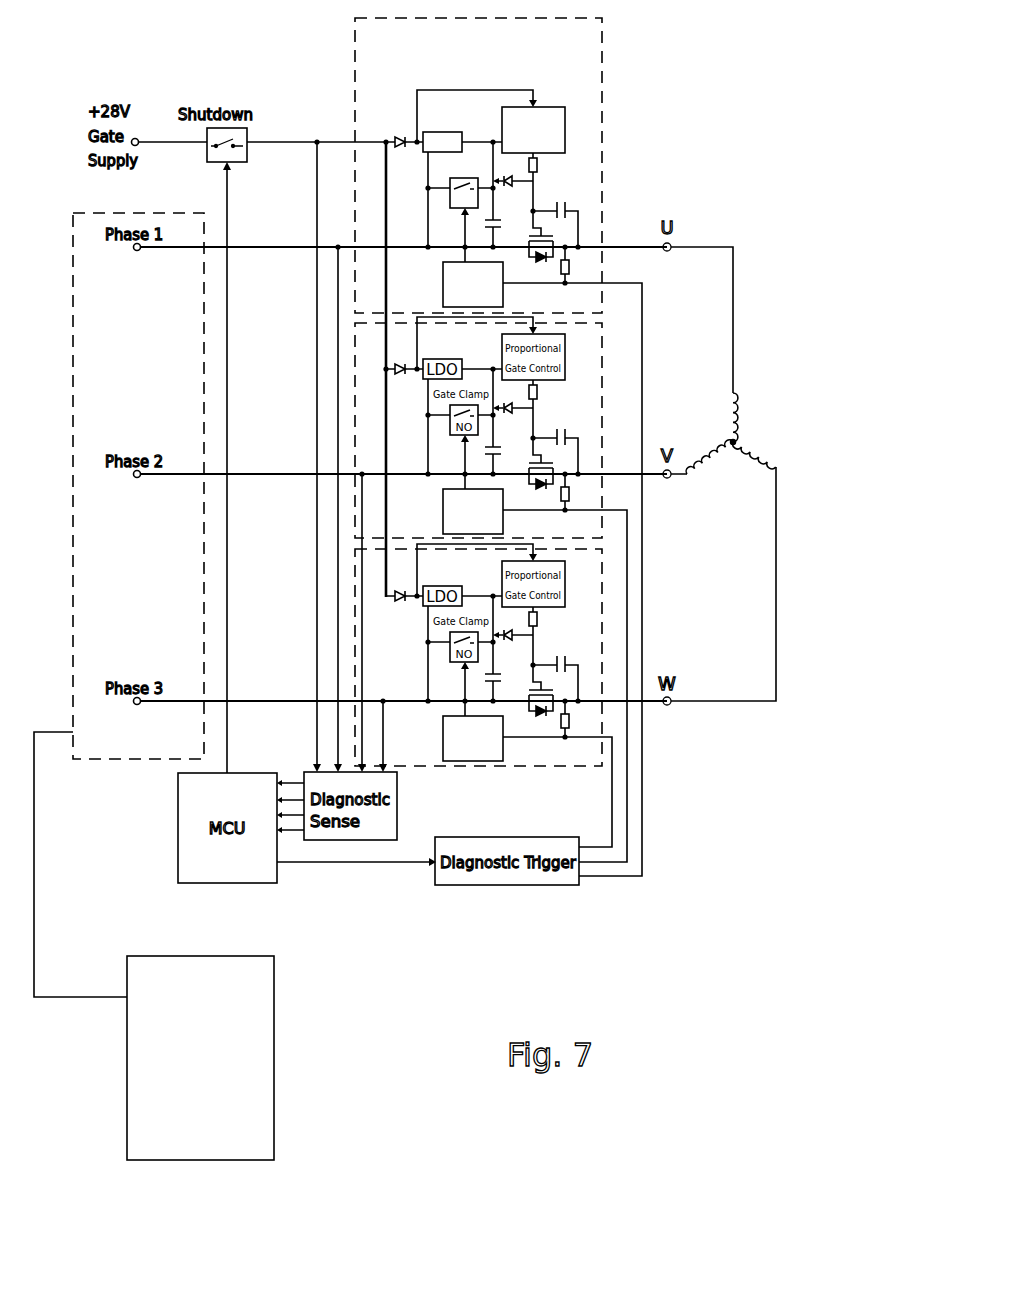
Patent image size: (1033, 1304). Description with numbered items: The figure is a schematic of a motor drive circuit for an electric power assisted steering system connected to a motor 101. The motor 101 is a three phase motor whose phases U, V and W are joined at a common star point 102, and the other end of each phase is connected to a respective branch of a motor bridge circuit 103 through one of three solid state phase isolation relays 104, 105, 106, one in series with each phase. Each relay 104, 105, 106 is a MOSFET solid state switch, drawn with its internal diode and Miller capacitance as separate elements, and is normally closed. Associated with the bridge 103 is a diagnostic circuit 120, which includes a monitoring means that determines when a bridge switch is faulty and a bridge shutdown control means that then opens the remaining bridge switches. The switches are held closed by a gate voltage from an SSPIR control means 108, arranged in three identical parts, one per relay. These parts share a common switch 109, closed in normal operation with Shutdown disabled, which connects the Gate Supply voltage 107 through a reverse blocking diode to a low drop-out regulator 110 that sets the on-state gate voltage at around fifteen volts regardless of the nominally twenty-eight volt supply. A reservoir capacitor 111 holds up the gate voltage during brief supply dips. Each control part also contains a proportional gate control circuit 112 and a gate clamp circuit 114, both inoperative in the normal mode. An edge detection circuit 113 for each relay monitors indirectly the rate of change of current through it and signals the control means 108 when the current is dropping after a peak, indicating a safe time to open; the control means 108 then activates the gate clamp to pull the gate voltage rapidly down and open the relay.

The motor 101 is at (755, 633).
The star point 102 is at (792, 387).
The motor bridge circuit 103 is at (130, 762).
The solid state phase isolation relay 104 is at (555, 240).
The solid state phase isolation relay 105 is at (614, 425).
The solid state phase isolation relay 106 is at (614, 652).
The Gate Supply voltage 107 is at (190, 169).
The SSPIR control means 108 is at (603, 116).
The common switch 109 is at (250, 130).
The low drop-out regulator 110 is at (443, 132).
The reservoir capacitor 111 is at (486, 216).
The proportional gate control circuit 112 is at (556, 105).
The edge detection circuit 113 is at (443, 290).
The gate clamp circuit 114 is at (404, 126).
The diagnostic circuit 120 is at (225, 1148).